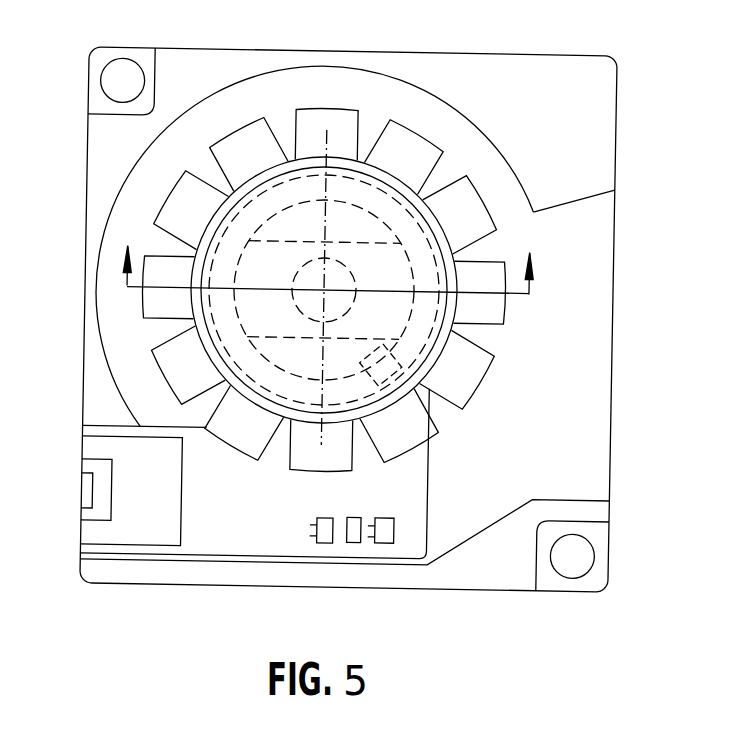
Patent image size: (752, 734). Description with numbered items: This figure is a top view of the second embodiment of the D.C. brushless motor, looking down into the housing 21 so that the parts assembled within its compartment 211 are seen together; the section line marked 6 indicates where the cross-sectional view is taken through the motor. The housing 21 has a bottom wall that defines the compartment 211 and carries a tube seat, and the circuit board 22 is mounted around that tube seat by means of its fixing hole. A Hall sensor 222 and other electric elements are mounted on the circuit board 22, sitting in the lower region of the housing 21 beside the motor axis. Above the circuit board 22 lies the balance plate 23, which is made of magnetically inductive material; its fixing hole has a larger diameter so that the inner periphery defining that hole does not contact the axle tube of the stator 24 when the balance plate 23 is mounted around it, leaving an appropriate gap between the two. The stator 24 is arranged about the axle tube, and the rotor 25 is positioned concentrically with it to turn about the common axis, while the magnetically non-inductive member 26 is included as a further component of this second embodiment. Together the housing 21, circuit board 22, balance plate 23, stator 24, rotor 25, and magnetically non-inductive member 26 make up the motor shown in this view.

The housing 21 is at (316, 319).
The compartment 211 is at (344, 567).
The circuit board 22 is at (256, 512).
The Hall sensor 222 is at (294, 480).
The balance plate 23 is at (324, 238).
The stator 24 is at (325, 191).
The rotor 25 is at (325, 215).
The magnetically non-inductive member 26 is at (283, 169).
The section line 6- 6 is at (329, 287).